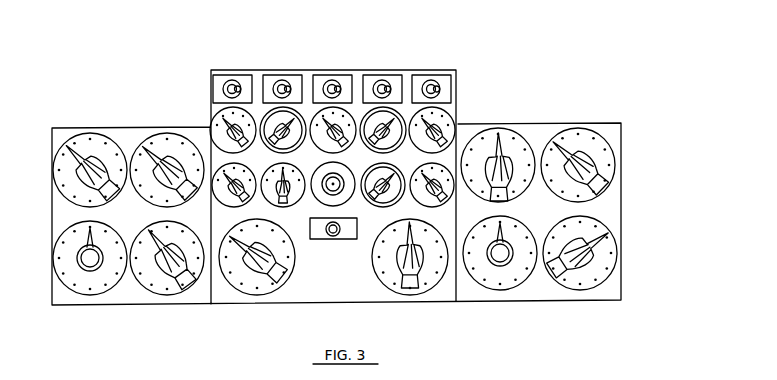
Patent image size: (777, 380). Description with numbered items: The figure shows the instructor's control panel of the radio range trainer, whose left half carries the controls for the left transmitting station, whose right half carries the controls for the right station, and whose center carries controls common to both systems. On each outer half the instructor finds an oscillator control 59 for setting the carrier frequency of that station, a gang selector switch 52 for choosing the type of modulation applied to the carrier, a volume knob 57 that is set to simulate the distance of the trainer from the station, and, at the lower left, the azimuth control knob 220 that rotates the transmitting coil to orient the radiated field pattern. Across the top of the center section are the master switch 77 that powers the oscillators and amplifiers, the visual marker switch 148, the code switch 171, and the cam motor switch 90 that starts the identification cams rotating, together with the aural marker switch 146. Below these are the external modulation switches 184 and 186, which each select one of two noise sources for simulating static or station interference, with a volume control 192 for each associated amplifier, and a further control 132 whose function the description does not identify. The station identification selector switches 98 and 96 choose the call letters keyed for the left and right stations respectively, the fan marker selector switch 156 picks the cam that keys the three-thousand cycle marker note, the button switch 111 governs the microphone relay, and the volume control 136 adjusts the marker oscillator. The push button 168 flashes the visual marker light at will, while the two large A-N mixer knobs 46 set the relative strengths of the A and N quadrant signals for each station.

The control knob (A-N mixer) 46 is at (253, 283).
The gang selector switch 52 is at (157, 147).
The volume knob 57 is at (165, 285).
The oscillator control 59 is at (87, 150).
The master switch 77 is at (273, 69).
The cam motor switch 90 is at (386, 86).
The range station identification selector switch (right) 96 is at (448, 165).
The range station identification selector switch (left) 98 is at (225, 167).
The button switch 111 is at (347, 193).
The small hand indicator 132 is at (348, 125).
The volume control 136 is at (388, 202).
The aural marker switch 146 is at (441, 86).
The visual marker switch 148 is at (243, 90).
The fan marker selector switch 156 is at (293, 198).
The button switch 168 is at (325, 233).
The code switch 171 is at (339, 86).
The external modulation switch (left) 184 is at (217, 128).
The external modulation switch (right) 186 is at (447, 126).
The volume control 192 is at (298, 124).
The azimuth control knob 220 is at (100, 288).